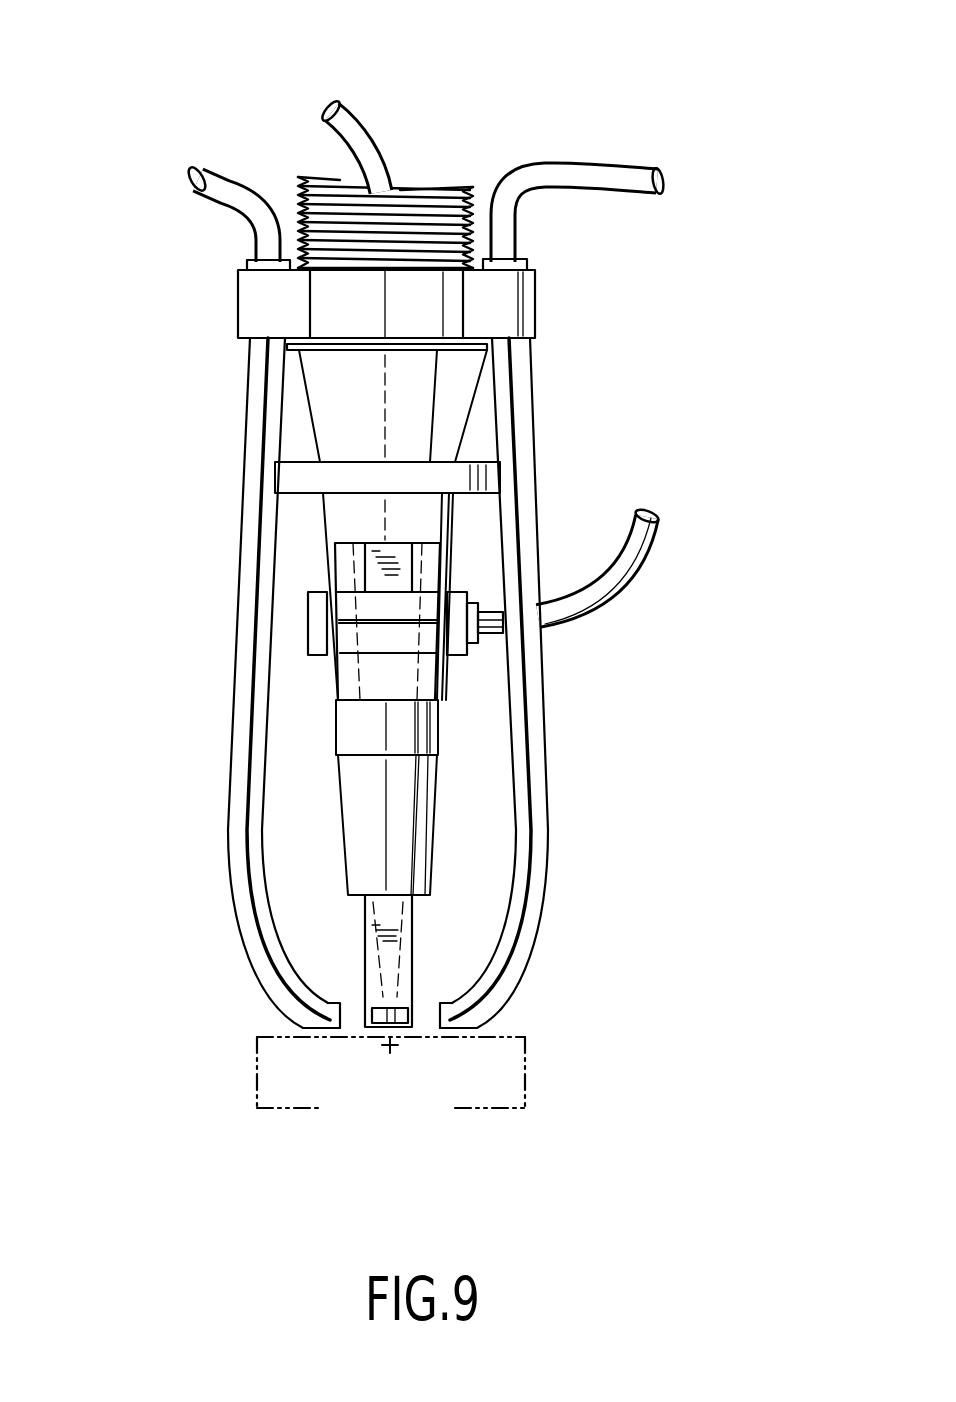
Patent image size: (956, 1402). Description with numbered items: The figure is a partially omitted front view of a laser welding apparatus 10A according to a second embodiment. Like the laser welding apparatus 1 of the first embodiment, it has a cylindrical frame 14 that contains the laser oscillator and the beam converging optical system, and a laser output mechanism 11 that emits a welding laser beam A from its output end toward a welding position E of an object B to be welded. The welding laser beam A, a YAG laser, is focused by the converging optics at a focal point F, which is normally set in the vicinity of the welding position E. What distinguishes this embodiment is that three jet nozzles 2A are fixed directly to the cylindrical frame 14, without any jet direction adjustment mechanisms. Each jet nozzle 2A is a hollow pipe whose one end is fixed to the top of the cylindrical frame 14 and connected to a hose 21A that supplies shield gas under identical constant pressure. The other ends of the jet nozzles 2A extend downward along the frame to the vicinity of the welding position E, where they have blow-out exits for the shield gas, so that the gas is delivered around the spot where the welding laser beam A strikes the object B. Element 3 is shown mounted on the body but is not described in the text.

The laser welding apparatus 10A is at (708, 97).
The laser welding apparatus 1 is at (97, 935).
The jet nozzles 2A is at (548, 797).
The valve 3 is at (463, 653).
The laser output mechanism 11 is at (347, 913).
The cylindrical frame 14 is at (320, 412).
The hose 21A is at (210, 172).
The welding laser beam A is at (365, 960).
The object to be welded B is at (257, 1095).
The welding position E is at (393, 1050).
The focal point F is at (388, 1050).